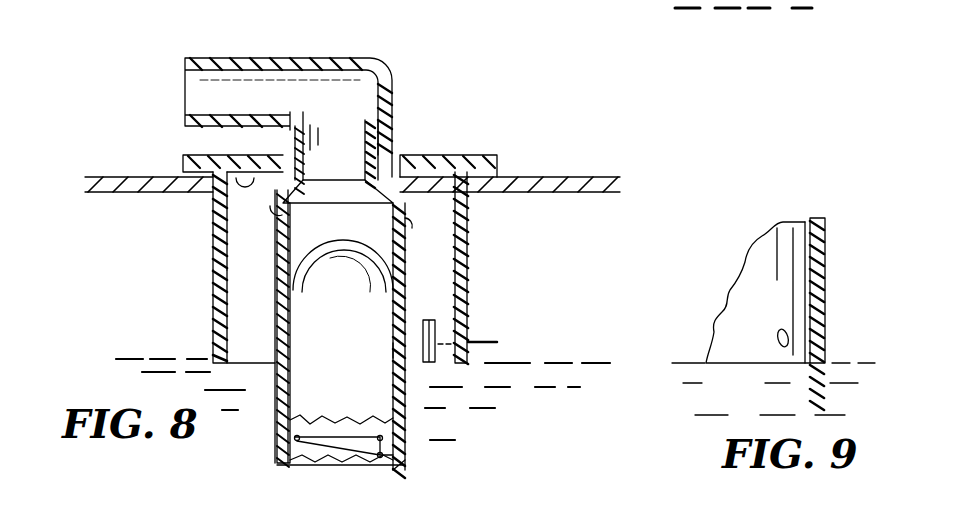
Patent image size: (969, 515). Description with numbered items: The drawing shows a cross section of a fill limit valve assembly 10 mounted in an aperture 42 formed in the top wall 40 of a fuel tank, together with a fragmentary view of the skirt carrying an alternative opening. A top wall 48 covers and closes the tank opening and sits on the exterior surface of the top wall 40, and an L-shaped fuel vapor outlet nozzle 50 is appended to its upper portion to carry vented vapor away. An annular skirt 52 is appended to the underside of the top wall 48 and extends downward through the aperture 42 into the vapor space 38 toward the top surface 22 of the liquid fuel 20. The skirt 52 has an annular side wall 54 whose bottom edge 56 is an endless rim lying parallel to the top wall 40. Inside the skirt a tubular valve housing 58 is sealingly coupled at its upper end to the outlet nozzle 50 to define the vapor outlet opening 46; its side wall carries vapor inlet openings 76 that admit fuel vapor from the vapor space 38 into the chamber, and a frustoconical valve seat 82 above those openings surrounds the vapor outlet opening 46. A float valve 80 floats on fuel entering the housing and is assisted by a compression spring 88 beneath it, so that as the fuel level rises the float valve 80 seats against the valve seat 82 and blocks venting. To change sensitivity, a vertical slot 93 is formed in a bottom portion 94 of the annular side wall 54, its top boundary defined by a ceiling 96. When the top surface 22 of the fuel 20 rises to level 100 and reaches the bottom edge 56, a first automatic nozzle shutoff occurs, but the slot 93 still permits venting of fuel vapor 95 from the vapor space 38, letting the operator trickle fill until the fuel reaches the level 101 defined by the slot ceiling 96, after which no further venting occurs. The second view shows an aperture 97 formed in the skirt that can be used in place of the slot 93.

In FIG. 8, the fill limit valve assembly 10 is at (180, 300).
In FIG. 8, the liquid fuel 20 is at (528, 400).
In FIG. 9, the liquid fuel 20 is at (700, 398).
In FIG. 8, the top surface of liquid fuel 22 is at (128, 358).
In FIG. 8, the vapor space 38 is at (118, 222).
In FIG. 8, the top wall of fuel tank 40 is at (552, 184).
In FIG. 8, the aperture 42 is at (213, 205).
In FIG. 8, the vapor outlet opening 46 is at (363, 147).
In FIG. 8, the top wall 48 is at (424, 147).
In FIG. 8, the L-shaped fuel vapor outlet nozzle 50 is at (282, 56).
In FIG. 8, the annular skirt 52 is at (470, 270).
In FIG. 9, the annular skirt 52 is at (830, 282).
In FIG. 8, the annular side wall 54 is at (213, 343).
In FIG. 8, the bottom edge 56 is at (238, 374).
In FIG. 9, the bottom edge 56 is at (730, 363).
In FIG. 8, the valve housing 58 is at (413, 433).
In FIG. 8, the vapor inlet openings 76 is at (280, 212).
In FIG. 8, the float valve 80 is at (340, 351).
In FIG. 8, the frustoconical valve seat 82 is at (378, 192).
In FIG. 8, the compression spring 88 is at (348, 422).
In FIG. 8, the vertical slot 93 is at (437, 330).
In FIG. 8, the bottom portion of annular side wall 94 is at (456, 333).
In FIG. 8, the fuel vapor 95 is at (393, 350).
In FIG. 8, the ceiling 96 is at (415, 336).
In FIG. 9, the aperture 97 is at (780, 330).
In FIG. 8, the level 100 is at (600, 193).
In FIG. 8, the level 101 is at (500, 322).